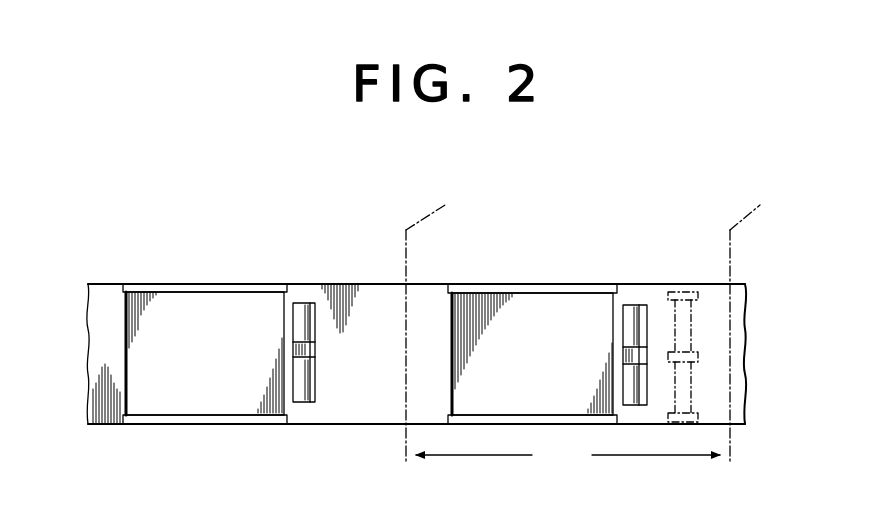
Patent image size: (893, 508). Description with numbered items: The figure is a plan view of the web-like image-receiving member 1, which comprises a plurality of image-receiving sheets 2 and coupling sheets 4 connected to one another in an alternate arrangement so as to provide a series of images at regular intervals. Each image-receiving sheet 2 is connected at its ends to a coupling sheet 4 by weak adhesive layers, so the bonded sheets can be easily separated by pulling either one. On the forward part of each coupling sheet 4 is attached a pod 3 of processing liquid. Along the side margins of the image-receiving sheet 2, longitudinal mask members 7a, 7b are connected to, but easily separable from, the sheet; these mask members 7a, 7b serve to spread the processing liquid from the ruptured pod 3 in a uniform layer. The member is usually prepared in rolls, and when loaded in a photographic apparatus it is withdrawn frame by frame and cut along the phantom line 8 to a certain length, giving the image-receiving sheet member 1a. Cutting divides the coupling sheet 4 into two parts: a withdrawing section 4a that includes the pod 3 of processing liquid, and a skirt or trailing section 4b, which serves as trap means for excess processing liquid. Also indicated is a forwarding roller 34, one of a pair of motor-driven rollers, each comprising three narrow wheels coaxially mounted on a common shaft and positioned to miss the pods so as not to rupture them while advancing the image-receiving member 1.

The image-receiving member 1 is at (126, 255).
The image-receiving sheet member 1a is at (568, 456).
The image-receiving sheet 2 is at (210, 320).
The pod of processing liquid 3 is at (303, 300).
The coupling sheet 4 is at (87, 374).
The withdrawing section 4a is at (353, 287).
The skirt or trailing section 4b is at (103, 425).
The mask member 7a is at (215, 420).
The mask member 7b is at (170, 285).
The phantom line 8 is at (590, 323).
The forwarding roller 34 is at (695, 312).